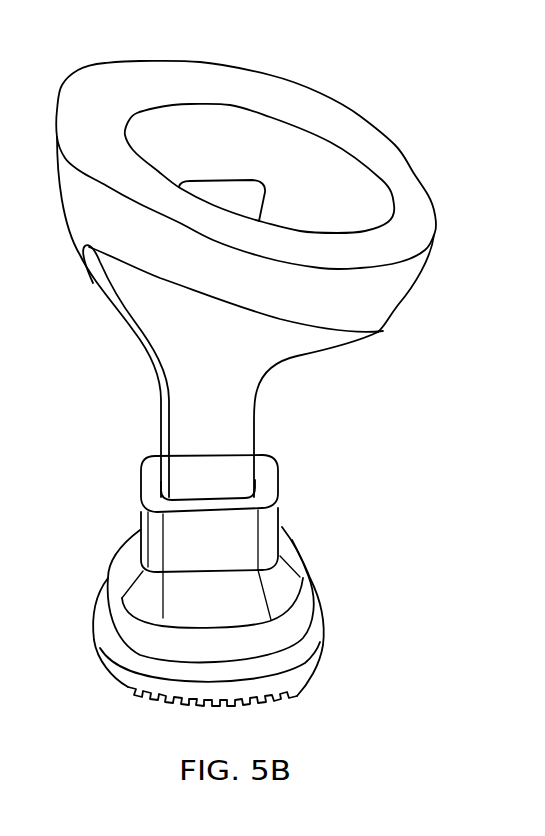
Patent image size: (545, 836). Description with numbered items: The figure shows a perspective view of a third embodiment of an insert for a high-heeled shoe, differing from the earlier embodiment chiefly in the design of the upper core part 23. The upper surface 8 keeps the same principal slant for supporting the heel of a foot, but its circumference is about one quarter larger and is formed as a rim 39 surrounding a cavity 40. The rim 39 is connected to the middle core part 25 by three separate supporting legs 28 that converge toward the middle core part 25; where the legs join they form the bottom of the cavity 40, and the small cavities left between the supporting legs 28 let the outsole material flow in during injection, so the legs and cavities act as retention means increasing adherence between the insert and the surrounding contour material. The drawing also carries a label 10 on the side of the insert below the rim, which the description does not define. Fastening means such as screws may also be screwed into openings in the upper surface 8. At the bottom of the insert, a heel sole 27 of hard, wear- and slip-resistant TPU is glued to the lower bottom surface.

The upper surface 8 is at (101, 88).
The supporting legs 28 is at (310, 180).
The cavity 40 is at (222, 192).
The rim 39 is at (420, 218).
The upper core part 23 is at (120, 245).
The handle 10 is at (144, 353).
The middle core part 25 is at (258, 408).
The heel sole 27 is at (108, 658).